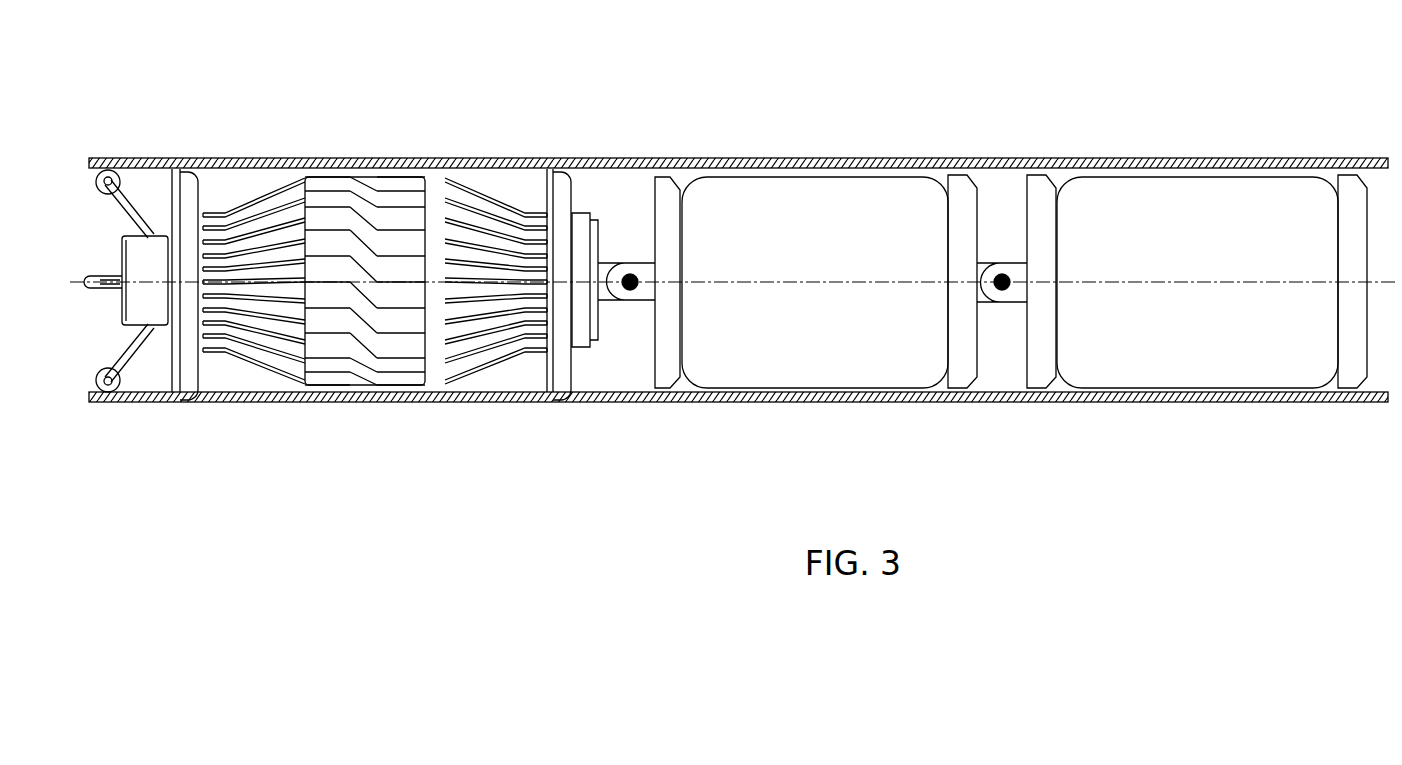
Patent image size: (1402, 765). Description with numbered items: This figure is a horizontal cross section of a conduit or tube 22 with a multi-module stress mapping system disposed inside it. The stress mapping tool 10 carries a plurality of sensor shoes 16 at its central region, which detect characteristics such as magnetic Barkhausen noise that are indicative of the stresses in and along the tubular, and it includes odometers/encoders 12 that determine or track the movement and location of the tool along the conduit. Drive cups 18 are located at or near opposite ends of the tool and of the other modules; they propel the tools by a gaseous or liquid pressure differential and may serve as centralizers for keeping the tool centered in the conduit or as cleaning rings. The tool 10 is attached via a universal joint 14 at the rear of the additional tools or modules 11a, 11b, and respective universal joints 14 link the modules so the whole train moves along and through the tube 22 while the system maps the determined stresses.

The stress mapping tool 10 is at (246, 190).
The additional tool or module 11a is at (758, 213).
The additional tool or module 11b is at (1118, 213).
The odometers/encoders 12 is at (110, 163).
The universal joint 14 is at (639, 258).
The sensor shoes 16 is at (339, 192).
The drive cups 18 is at (191, 160).
The conduit or tube 22 is at (1287, 157).